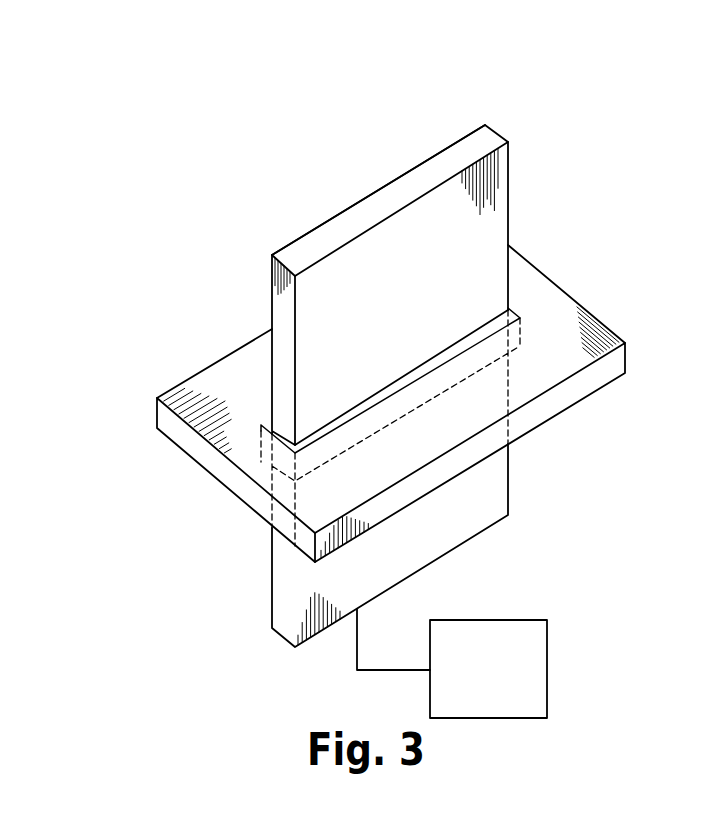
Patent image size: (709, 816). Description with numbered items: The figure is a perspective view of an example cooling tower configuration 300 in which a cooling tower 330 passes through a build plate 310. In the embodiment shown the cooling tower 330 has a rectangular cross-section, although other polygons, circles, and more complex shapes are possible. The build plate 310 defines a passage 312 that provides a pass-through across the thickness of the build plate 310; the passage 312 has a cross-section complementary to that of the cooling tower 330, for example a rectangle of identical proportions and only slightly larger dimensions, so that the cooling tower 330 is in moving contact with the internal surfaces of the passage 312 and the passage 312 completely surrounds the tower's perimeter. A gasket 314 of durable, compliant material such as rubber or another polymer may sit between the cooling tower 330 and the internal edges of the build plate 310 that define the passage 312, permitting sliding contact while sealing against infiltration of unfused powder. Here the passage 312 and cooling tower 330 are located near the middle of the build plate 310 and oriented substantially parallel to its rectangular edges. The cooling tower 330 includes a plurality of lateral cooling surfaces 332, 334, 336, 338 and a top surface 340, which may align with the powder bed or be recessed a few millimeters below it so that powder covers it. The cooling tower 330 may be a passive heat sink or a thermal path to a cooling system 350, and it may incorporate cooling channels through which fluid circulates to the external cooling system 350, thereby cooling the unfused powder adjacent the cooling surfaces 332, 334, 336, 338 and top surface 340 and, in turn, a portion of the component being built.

The cooling tower configuration 300 is at (257, 119).
The build plate 310 is at (174, 427).
The passage 312 is at (268, 433).
The gasket 314 is at (512, 316).
The cooling tower 330 is at (264, 298).
The lateral cooling surface 332 is at (487, 170).
The lateral cooling surface 334 is at (281, 338).
The lateral cooling surface 336 is at (348, 210).
The lateral cooling surface 338 is at (510, 184).
The top surface 340 is at (458, 153).
The cooling system 350 is at (483, 620).